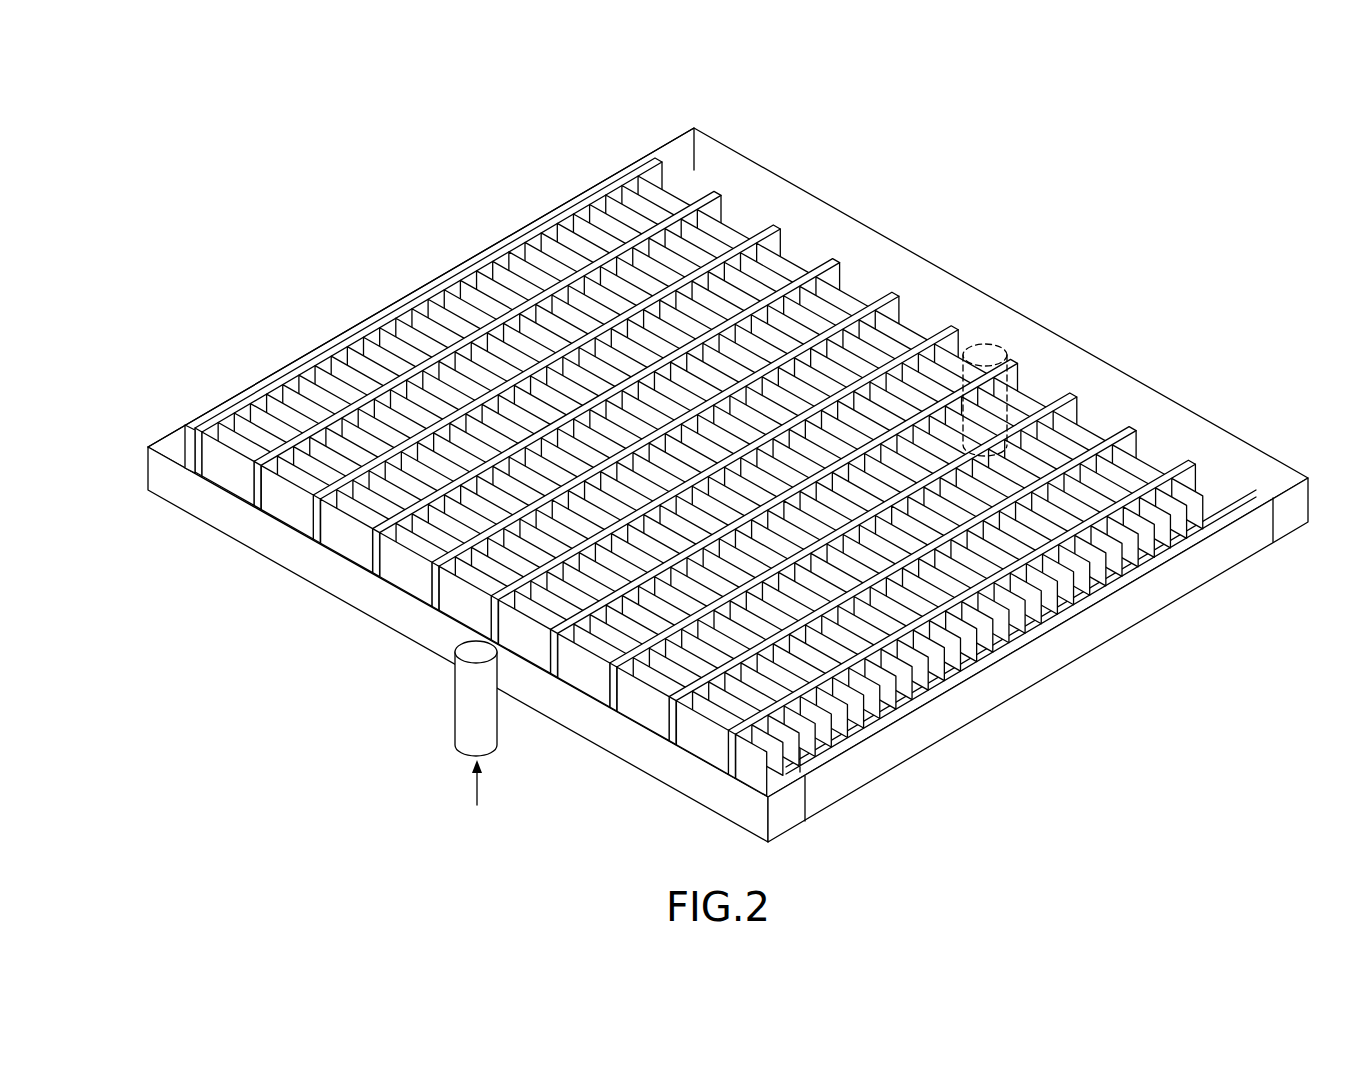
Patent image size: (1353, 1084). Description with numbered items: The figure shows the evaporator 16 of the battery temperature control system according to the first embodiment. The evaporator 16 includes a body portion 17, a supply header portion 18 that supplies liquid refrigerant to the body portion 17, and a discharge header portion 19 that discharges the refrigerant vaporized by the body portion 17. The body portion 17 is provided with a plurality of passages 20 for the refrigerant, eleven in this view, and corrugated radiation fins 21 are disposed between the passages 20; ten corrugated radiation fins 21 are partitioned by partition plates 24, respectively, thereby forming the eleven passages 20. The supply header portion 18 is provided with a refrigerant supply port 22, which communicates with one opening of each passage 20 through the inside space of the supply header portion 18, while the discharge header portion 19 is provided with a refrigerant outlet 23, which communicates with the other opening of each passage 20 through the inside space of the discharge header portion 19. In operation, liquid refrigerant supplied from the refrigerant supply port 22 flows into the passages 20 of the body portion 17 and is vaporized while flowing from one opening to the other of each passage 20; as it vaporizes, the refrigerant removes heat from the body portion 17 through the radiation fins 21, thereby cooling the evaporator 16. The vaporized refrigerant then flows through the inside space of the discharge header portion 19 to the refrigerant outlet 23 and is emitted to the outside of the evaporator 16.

The evaporator 16 is at (606, 182).
The body portion 17 is at (1015, 660).
The supply header portion 18 is at (380, 602).
The discharge header portion 19 is at (983, 282).
The passage 20 is at (805, 790).
The corrugated radiation fin 21 is at (535, 312).
The refrigerant supply port 22 is at (453, 690).
The refrigerant outlet 23 is at (1012, 400).
The partition plate 24 is at (688, 160).